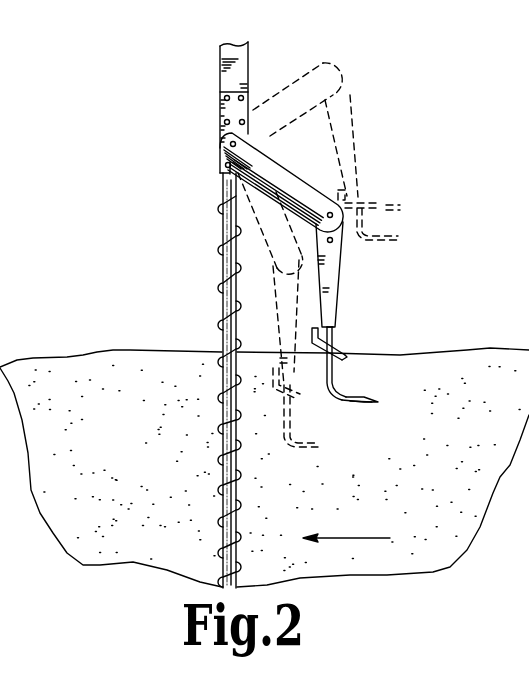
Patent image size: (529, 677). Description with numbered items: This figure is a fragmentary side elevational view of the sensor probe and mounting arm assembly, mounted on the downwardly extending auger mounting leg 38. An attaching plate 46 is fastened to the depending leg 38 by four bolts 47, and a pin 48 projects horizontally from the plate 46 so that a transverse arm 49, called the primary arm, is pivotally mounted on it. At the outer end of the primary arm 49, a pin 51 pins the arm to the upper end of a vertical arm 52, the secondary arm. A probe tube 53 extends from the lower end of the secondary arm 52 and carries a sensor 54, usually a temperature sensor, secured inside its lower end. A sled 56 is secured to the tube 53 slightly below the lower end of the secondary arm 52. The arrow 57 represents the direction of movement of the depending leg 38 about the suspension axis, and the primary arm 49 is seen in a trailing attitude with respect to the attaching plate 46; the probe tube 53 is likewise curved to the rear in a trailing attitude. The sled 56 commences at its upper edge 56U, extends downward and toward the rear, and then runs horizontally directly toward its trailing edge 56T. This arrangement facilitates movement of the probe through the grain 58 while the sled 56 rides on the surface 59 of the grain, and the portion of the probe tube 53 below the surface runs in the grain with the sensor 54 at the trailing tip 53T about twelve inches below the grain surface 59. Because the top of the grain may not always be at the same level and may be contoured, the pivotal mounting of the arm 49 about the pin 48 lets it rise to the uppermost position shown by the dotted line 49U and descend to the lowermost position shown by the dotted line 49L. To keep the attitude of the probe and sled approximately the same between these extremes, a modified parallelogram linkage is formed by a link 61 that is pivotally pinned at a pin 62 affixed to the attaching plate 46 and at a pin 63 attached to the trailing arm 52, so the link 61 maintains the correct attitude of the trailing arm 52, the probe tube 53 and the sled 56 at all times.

The auger mounting leg 38 is at (220, 53).
The attaching plate 46 is at (222, 112).
The bolts 47 is at (244, 101).
The pin 48 is at (243, 135).
The transverse arm 49 is at (288, 176).
The uppermost position 49U is at (324, 62).
The lowermost position 49L is at (267, 238).
The pin 51 is at (333, 217).
The vertical arm 52 is at (336, 268).
The probe tube 53 is at (334, 375).
The trailing tip 53T is at (354, 404).
The sensor 54 is at (372, 402).
The sled 56 is at (312, 342).
The upper edge 56U is at (318, 325).
The trailing edge 56T is at (346, 357).
The arrow 57 is at (346, 529).
The grain 58 is at (137, 470).
The surface 59 is at (67, 358).
The link 61 is at (262, 239).
The pin 62 is at (221, 167).
The pin 63 is at (333, 242).